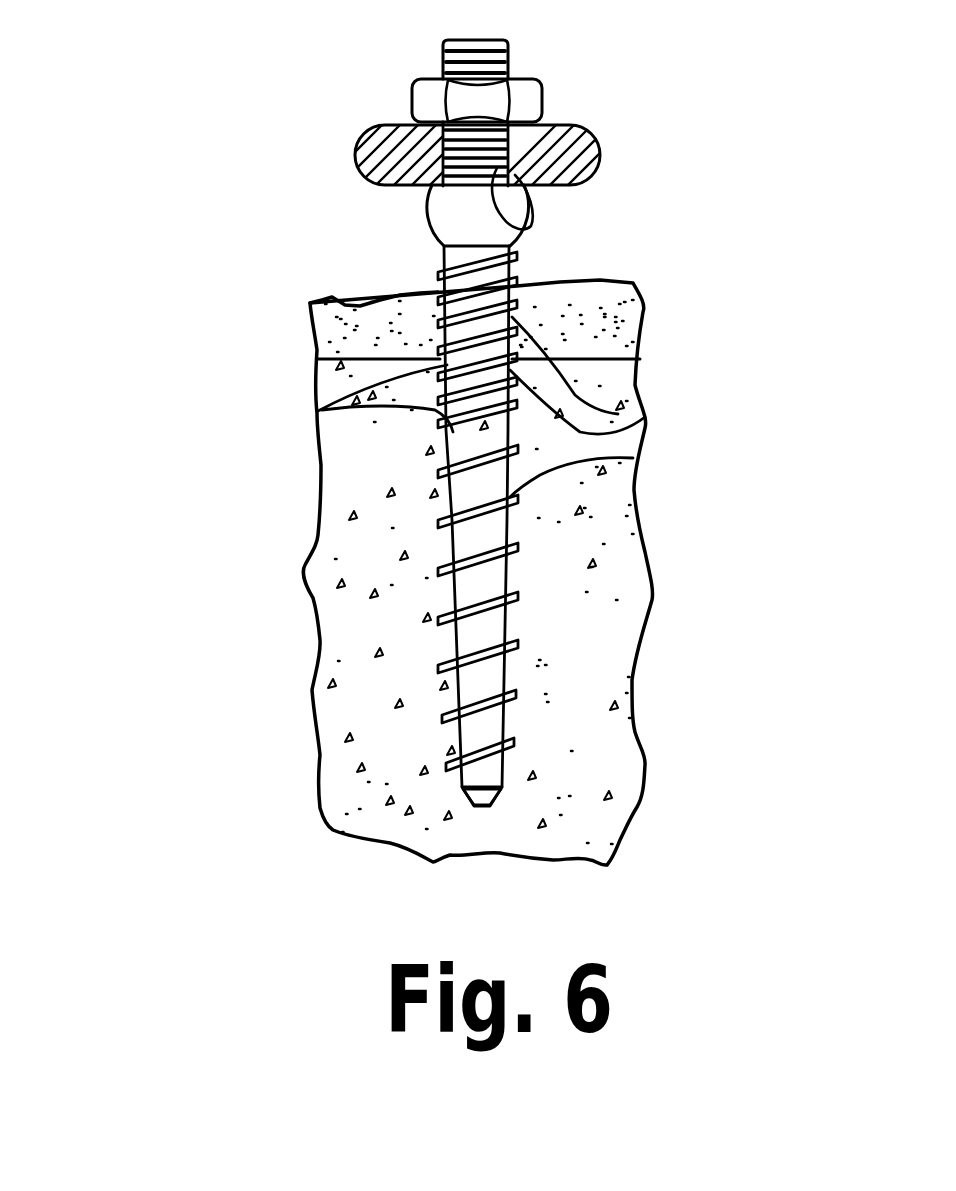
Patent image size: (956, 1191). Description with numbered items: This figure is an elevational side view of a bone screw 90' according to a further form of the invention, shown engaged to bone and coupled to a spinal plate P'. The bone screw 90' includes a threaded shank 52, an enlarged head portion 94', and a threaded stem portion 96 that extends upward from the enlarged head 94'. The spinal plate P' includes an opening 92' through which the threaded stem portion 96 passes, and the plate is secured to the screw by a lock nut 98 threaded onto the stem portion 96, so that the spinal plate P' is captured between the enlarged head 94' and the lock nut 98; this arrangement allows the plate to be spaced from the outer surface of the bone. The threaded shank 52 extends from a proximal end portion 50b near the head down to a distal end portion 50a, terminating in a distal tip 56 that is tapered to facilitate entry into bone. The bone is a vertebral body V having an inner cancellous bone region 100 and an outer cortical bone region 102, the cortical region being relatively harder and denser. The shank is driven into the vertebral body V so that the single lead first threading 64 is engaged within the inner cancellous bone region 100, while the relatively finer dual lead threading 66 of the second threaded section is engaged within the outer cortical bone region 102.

The bone screw 90' is at (107, 117).
The threaded stem portion 96 is at (510, 56).
The lock nut 98 is at (422, 98).
The spinal plate P' is at (441, 158).
The opening 92' is at (573, 209).
The enlarged head portion 94' is at (378, 217).
The proximal end portion 50b is at (404, 292).
The outer cortical bone region 102 is at (620, 322).
The first threading 64 is at (318, 412).
The second threading 66 is at (620, 414).
The vertebral body V is at (270, 491).
The inner cancellous bone region 100 is at (622, 555).
The threaded shank 52 is at (362, 607).
The distal end portion 50a is at (526, 789).
The distal tip 56 is at (466, 800).